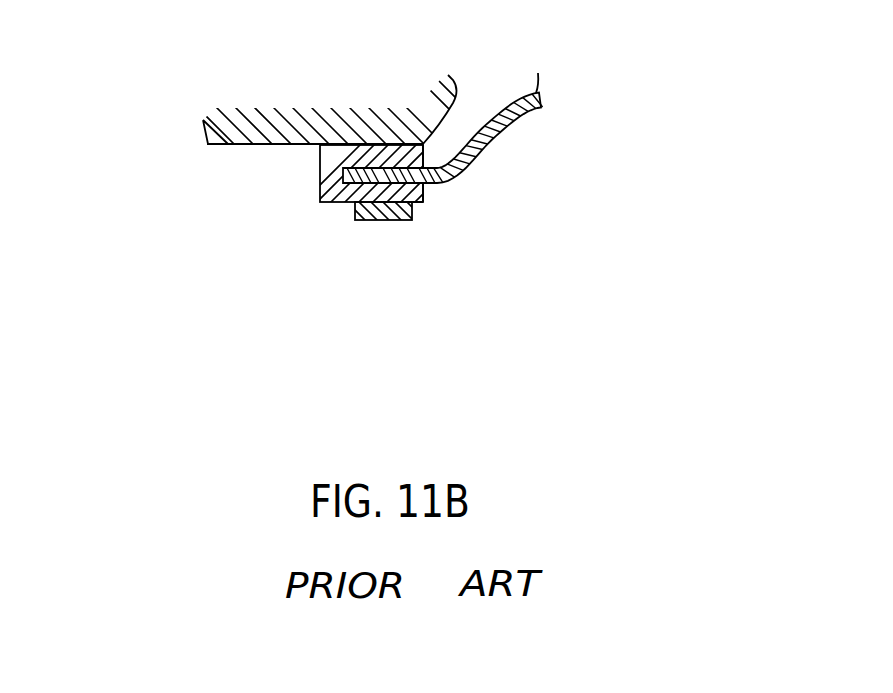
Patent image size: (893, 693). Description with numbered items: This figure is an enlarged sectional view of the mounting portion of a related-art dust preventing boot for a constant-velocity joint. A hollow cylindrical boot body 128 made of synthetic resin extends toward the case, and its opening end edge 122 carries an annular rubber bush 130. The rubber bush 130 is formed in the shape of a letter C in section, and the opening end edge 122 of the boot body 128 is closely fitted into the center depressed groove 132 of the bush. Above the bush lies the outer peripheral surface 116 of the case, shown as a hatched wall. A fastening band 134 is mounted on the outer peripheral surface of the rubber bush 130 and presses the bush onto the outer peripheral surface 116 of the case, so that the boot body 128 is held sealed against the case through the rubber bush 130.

The outer peripheral surface of the case 116 is at (237, 146).
The boot body 128 is at (487, 141).
The rubber bush 130 is at (320, 158).
The opening end edge 122 is at (322, 203).
The center depressed groove 132 is at (427, 197).
The fastening band 134 is at (372, 222).